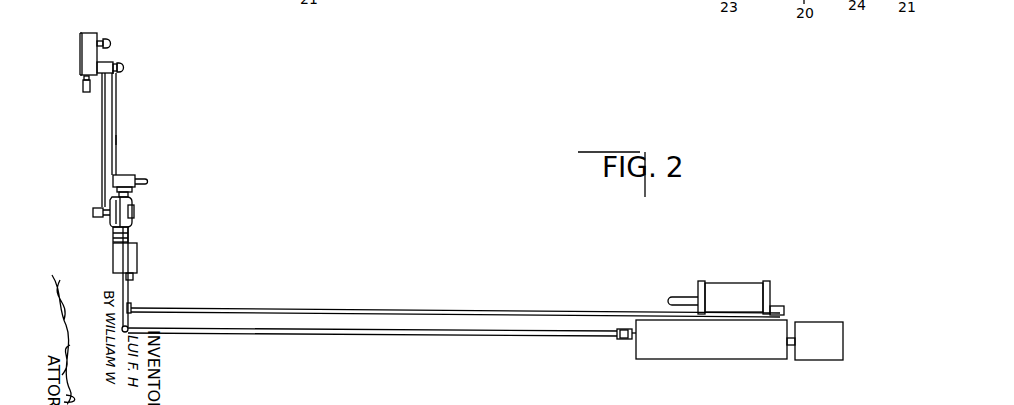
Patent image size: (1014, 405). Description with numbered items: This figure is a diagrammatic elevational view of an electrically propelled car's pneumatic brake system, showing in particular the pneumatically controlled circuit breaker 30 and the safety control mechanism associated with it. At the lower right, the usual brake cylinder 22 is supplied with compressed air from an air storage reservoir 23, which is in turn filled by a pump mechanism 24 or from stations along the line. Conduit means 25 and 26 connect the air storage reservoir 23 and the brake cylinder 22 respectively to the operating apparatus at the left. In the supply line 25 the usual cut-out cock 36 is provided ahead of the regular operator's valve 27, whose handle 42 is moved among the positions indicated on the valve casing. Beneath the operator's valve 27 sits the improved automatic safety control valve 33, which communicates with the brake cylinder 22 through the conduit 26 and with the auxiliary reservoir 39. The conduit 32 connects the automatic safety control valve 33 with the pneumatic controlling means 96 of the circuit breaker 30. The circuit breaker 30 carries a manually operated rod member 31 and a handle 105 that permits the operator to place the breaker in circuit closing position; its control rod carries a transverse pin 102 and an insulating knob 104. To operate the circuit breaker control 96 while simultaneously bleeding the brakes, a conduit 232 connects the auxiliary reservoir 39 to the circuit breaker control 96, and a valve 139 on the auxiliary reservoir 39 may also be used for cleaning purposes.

The brake cylinder 22 is at (741, 283).
The air storage reservoir 23 is at (725, 358).
The pump mechanism 24 is at (830, 321).
The conduit means 25 is at (565, 336).
The conduit means 26 is at (554, 308).
The operator's valve 27 is at (130, 177).
The circuit breaker 30 is at (88, 61).
The manually operated rod member 31 is at (105, 39).
The conduit 32 is at (115, 130).
The automatic safety control valve 33 is at (135, 211).
The cut-out cock 36 is at (129, 233).
The auxiliary reservoir 39 is at (138, 266).
The handle 42 is at (148, 182).
The pneumatic controlling means 96 is at (113, 65).
The pin 102 is at (118, 73).
The insulating knob 104 is at (123, 66).
The handle 105 is at (85, 93).
The valve 139 is at (134, 282).
The conduit 232 is at (118, 141).